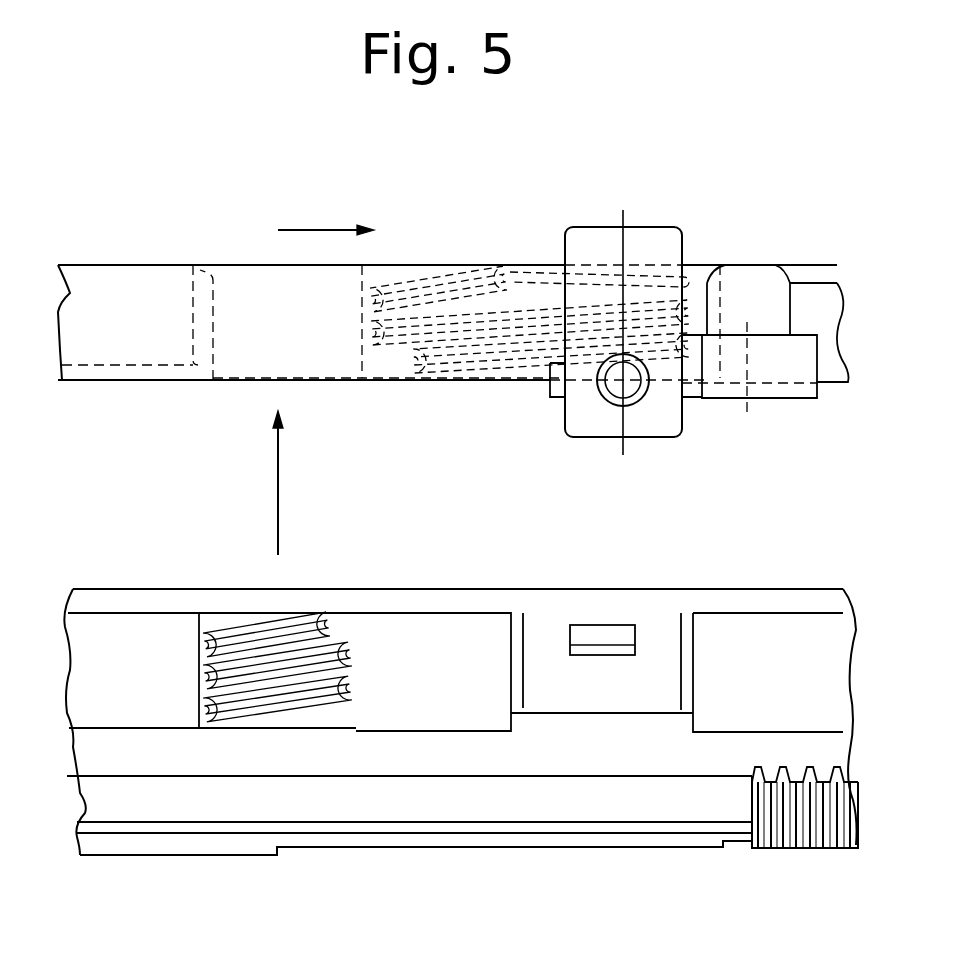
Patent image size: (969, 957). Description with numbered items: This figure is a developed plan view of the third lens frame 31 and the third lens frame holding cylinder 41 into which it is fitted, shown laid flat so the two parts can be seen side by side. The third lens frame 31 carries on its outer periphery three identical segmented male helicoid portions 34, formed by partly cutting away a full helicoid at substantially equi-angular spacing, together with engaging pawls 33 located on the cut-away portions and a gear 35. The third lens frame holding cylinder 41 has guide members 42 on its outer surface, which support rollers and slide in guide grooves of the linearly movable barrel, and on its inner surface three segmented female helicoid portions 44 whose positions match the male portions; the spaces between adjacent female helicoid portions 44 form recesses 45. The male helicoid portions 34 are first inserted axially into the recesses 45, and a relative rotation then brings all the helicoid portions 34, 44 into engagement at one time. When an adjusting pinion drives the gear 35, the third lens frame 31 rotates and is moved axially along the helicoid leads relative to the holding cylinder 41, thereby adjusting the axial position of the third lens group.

The third lens frame 31 is at (433, 812).
The engaging pawls 33 is at (608, 643).
The segmented male helicoid portions 34 is at (254, 728).
The gear 35 is at (803, 822).
The third lens frame holding cylinder 41 is at (103, 290).
The guide members 42 is at (654, 243).
The segmented female helicoid portions 44 is at (455, 262).
The recesses 45 is at (268, 320).